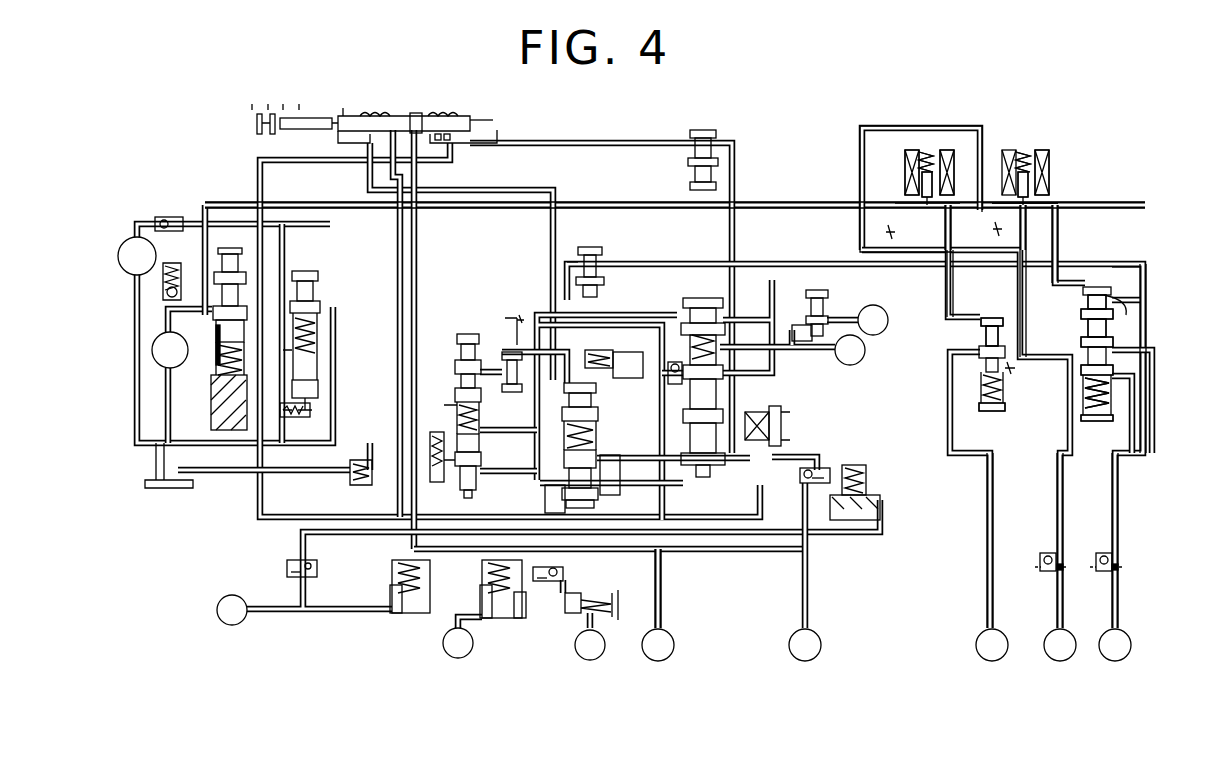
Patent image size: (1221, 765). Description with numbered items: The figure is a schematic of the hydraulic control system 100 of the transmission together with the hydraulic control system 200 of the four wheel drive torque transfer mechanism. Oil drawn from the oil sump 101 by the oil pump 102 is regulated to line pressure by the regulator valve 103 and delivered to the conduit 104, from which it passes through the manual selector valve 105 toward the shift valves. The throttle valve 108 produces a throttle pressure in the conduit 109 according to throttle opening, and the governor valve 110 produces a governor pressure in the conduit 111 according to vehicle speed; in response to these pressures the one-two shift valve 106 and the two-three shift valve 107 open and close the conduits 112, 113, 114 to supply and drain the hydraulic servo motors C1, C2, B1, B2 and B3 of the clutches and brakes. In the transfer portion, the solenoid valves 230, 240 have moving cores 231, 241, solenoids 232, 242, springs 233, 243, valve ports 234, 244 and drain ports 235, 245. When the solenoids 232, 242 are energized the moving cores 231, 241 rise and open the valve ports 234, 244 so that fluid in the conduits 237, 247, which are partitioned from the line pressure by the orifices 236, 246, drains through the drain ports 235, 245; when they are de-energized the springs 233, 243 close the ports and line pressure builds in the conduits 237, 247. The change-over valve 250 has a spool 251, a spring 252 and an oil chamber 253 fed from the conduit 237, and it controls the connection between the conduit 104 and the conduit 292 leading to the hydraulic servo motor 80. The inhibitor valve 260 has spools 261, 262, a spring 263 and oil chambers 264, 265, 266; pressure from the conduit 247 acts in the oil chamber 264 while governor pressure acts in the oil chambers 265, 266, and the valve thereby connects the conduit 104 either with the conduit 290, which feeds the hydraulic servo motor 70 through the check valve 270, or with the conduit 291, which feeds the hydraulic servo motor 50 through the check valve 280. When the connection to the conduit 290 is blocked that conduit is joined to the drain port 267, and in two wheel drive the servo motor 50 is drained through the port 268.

The hydraulic control circuit 100 is at (757, 162).
The hydraulic control system 200 is at (852, 170).
The oil sump 101 is at (185, 487).
The oil pump 102 is at (154, 352).
The regulator valve 103 is at (225, 248).
The conduit 104 is at (334, 204).
The manual selector valve 105 is at (384, 114).
The 1-2 shift valve 106 is at (702, 478).
The 2-3 shift valve 107 is at (610, 492).
The throttle valve 108 is at (463, 333).
The conduit 109 is at (514, 334).
The governor valve 110 is at (775, 414).
The conduit 111 is at (748, 490).
The conduit 112 is at (624, 456).
The conduit 113 is at (545, 501).
The conduit 114 is at (663, 604).
The solenoid valve 230 is at (933, 128).
The moving core 231 is at (916, 200).
The solenoid 232 is at (906, 155).
The spring 233 is at (924, 162).
The valve port 234 is at (941, 218).
The drain port 235 is at (957, 194).
The orifice 236 is at (889, 230).
The conduit 237 is at (947, 288).
The solenoid valve 240 is at (1022, 140).
The moving core 241 is at (1033, 188).
The solenoid 242 is at (1048, 172).
The spring 243 is at (1030, 155).
The valve port 244 is at (1023, 216).
The drain port 245 is at (1048, 205).
The orifice 246 is at (999, 226).
The conduit 247 is at (1058, 236).
The change-over valve 250 is at (983, 314).
The spool 251 is at (981, 333).
The spring 252 is at (992, 411).
The oil chamber 253 is at (1006, 311).
The inhibitor valve 260 is at (1097, 284).
The spool 261 is at (1084, 308).
The spool 262 is at (1089, 345).
The spring 263 is at (1097, 418).
The oil chamber 264 is at (1123, 267).
The oil chamber 265 is at (1120, 318).
The oil chamber 266 is at (1085, 413).
The drain port 267 is at (1115, 338).
The port 268 is at (1115, 374).
The check valve 270 is at (1130, 565).
The check valve 280 is at (1067, 561).
The conduit 290 is at (1125, 522).
The conduit 291 is at (1065, 520).
The conduit 292 is at (995, 518).
The hydraulic servo motor 50 is at (1051, 634).
The hydraulic servo motor 70 is at (1107, 636).
The brake 80 is at (979, 638).
The hydraulic servo motor B1 is at (675, 645).
The hydraulic servo motor B2 is at (820, 645).
The hydraulic servo motor B3 is at (877, 346).
The hydraulic servo motor C1 is at (240, 625).
The hydraulic servo motor C2 is at (472, 645).